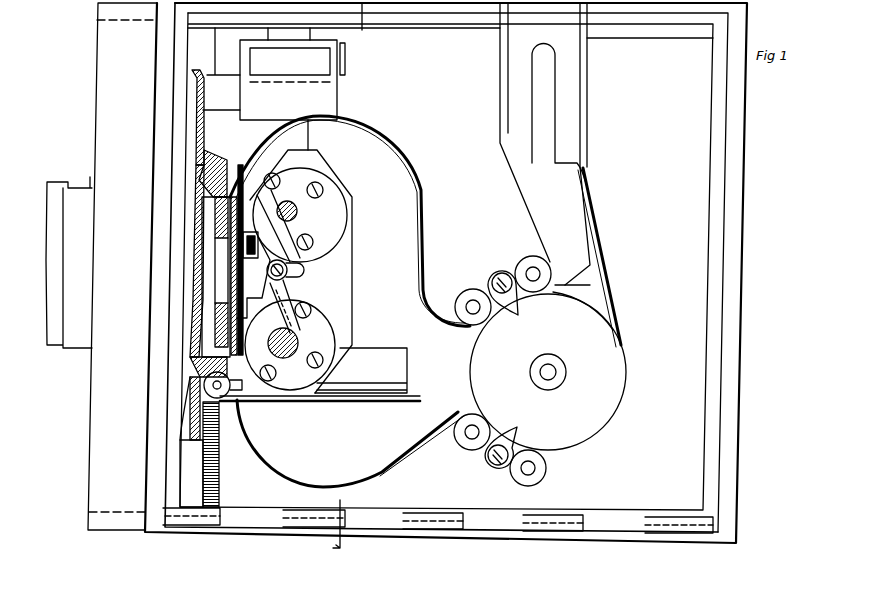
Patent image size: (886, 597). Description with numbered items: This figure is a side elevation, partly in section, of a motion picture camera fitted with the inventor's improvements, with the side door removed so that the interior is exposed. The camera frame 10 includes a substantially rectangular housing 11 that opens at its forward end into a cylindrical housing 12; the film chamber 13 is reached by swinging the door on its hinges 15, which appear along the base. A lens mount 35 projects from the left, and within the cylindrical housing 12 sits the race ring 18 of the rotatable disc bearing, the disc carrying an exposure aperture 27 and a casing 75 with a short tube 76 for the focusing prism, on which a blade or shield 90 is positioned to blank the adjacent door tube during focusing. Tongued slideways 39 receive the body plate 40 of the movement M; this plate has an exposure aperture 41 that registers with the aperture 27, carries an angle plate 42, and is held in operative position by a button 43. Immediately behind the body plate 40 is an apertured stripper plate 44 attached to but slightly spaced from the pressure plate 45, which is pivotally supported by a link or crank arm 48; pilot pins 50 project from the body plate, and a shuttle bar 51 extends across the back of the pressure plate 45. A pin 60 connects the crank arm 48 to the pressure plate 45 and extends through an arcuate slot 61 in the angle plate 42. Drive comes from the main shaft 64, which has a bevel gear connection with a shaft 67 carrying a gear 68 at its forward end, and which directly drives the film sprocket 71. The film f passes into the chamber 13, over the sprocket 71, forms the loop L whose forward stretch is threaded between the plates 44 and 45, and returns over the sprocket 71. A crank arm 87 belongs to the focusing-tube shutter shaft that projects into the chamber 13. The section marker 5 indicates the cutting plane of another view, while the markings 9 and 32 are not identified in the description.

The section line 5 is at (342, 528).
The top member 9 is at (558, 173).
The camera frame 10 is at (745, 282).
The rectangular housing 11 is at (732, 217).
The cylindrical housing 12 is at (118, 523).
The film chamber 13 is at (207, 222).
The hinges 15 is at (457, 527).
The race ring 18 is at (197, 42).
The exposure aperture 27 is at (195, 273).
The pivot screw 32 is at (265, 270).
The lens mount 35 is at (72, 182).
The tongued slideways 39 is at (192, 365).
The body plate 40 is at (215, 333).
The exposure aperture 41 is at (220, 258).
The angle plate 42 is at (345, 222).
The button 43 is at (230, 402).
The apertured stripper plate 44 is at (213, 313).
The pressure plate 45 is at (247, 340).
The link or crank arm 48 is at (297, 327).
The pilot pins 50 is at (230, 197).
The shuttle bar 51 is at (250, 232).
The pin 60 is at (287, 280).
The arcuate slot 61 is at (298, 265).
The main shaft 64 is at (552, 370).
The shaft 67 is at (368, 405).
The gear 68 is at (220, 490).
The film sprocket 71 is at (594, 425).
The casing 75 is at (292, 135).
The short tube 76 is at (196, 97).
The crank arm 87 is at (347, 62).
The blade or shield 90 is at (333, 95).
The movement M is at (162, 200).
The loop L is at (365, 132).
The film f is at (530, 222).